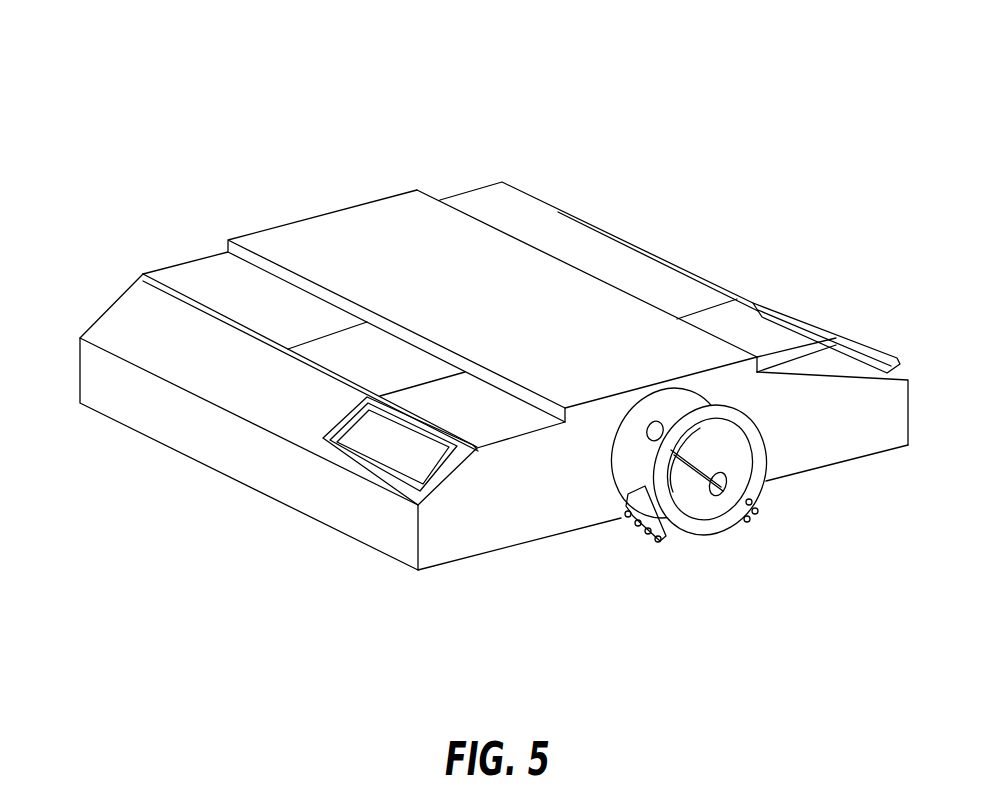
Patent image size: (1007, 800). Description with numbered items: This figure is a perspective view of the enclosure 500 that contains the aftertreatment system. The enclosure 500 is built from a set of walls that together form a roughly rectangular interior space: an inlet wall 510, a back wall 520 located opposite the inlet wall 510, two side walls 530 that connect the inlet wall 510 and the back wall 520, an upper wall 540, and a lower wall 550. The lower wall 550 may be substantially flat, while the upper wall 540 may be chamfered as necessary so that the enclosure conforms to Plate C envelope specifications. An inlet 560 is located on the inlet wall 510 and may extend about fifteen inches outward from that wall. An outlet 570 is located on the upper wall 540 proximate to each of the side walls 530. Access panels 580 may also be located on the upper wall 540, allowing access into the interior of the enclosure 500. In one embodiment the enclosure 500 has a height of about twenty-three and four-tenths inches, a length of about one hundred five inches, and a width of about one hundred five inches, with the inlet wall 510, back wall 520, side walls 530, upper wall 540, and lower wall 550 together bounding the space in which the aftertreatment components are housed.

The enclosure 500 is at (503, 66).
The inlet wall 510 is at (408, 456).
The back wall 520 is at (306, 244).
The side walls 530 is at (90, 380).
The upper wall 540 is at (514, 307).
The lower wall 550 is at (354, 502).
The inlet 560 is at (700, 537).
The outlet 570 is at (848, 335).
The access panels 580 is at (391, 368).